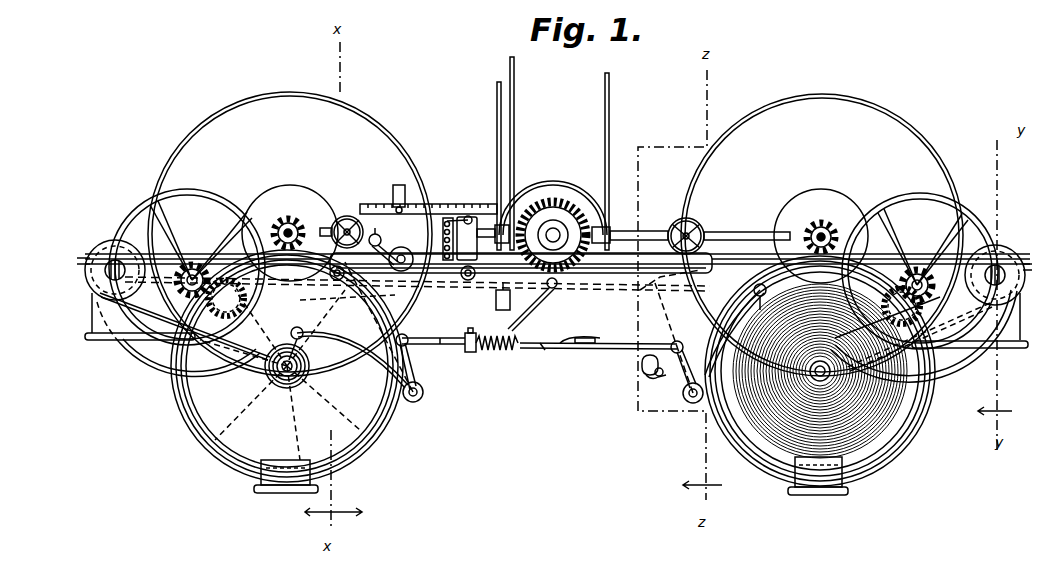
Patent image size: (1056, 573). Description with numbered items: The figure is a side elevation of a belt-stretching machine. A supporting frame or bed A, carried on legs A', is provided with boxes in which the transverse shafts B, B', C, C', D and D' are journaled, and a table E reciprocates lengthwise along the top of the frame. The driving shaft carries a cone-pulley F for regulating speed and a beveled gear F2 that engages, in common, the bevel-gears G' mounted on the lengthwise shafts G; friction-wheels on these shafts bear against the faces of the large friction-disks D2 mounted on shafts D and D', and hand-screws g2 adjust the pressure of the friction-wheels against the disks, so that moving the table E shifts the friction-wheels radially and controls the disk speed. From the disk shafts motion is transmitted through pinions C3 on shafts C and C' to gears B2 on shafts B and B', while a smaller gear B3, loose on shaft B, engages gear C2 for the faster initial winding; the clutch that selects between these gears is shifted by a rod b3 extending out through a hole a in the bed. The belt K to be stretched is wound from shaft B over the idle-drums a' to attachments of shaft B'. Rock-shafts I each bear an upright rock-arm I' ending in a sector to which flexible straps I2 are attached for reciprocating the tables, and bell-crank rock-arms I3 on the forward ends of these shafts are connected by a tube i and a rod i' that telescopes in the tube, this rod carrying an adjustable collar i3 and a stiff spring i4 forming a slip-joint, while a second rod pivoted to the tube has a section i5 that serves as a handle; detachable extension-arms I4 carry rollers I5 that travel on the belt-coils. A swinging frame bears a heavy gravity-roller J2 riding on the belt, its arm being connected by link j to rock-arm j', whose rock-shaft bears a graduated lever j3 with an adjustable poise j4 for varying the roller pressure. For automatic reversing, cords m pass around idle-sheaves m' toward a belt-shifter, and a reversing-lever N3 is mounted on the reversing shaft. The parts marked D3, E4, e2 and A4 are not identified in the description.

The friction-disk D2 is at (555, 234).
The inner ring of disk wheel D3 is at (292, 222).
The transverse shaft D' is at (294, 222).
The transverse shaft D is at (819, 223).
The idle-drum a' is at (554, 261).
The gear C2 is at (138, 350).
The transverse shaft C' is at (174, 280).
The transverse shaft C is at (929, 285).
The pinion C3 is at (205, 308).
The supporting frame or bed A is at (552, 320).
The table E is at (660, 258).
The belt K is at (546, 303).
The gear B2 is at (176, 376).
The transverse shaft B' is at (311, 366).
The transverse shaft B is at (887, 379).
The smaller gear B3 is at (875, 450).
The leg A' is at (550, 486).
The cord m is at (553, 153).
The cone-pulley F is at (560, 195).
The beveled gear F2 is at (575, 205).
The bevel-gear G' is at (558, 206).
The shaft G is at (633, 229).
The hand-screw g2 is at (702, 230).
The graduated lever j3 is at (440, 203).
The adjustable poise j4 is at (402, 177).
The rock-arm j' is at (460, 221).
The link j is at (465, 261).
The gravity-roller J2 is at (376, 234).
The crank lever E4 is at (418, 240).
The carriage roller e2 is at (335, 282).
The rock-shaft I is at (553, 399).
The flexible strap I2 is at (660, 345).
The rock-arm I3 is at (405, 365).
The extension-arm I4 is at (372, 340).
The roller I5 is at (300, 327).
The upright rock-arm I' is at (522, 327).
The frame member A4 is at (372, 308).
The adjustable collar i3 is at (476, 335).
The spring i4 is at (500, 352).
The section i5 is at (590, 338).
The rod i' is at (437, 334).
The tube i is at (545, 335).
The idle-sheave m' is at (489, 300).
The reversing-lever N3 is at (534, 304).
The hole a is at (647, 365).
The rod b3 is at (652, 380).